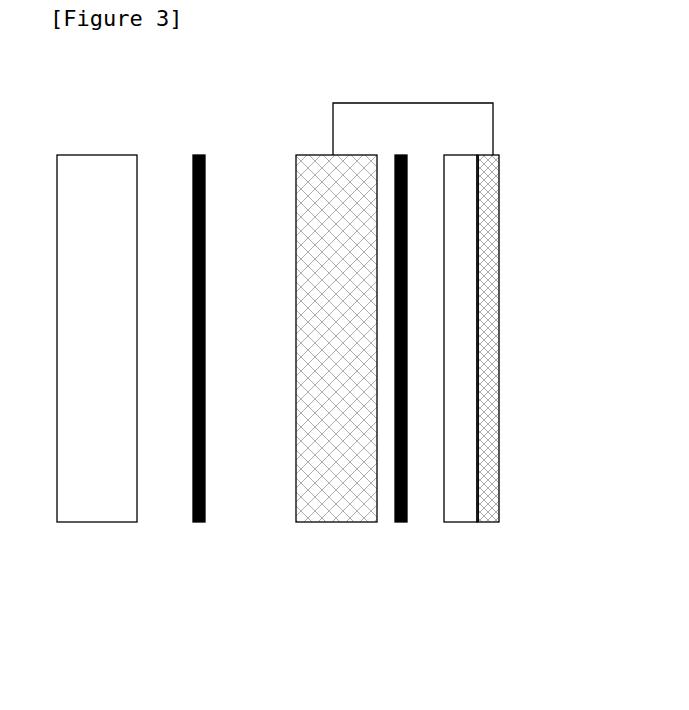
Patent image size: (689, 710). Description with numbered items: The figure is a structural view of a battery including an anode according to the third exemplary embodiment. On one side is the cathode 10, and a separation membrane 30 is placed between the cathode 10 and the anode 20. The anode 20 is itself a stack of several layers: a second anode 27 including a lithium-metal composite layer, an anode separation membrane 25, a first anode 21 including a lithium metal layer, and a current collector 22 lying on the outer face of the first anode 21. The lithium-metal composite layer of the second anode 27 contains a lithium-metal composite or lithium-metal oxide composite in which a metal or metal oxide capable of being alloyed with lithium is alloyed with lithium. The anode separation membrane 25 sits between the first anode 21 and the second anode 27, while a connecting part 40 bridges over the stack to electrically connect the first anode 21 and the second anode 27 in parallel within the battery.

The cathode 10 is at (112, 503).
The anode 20 is at (442, 628).
The first anode 21 is at (463, 497).
The current collector 22 is at (488, 500).
The anode separation membrane 25 is at (407, 298).
The second anode including lithium-metal composite layer 27 is at (343, 497).
The separation membrane 30 is at (198, 524).
The connecting part 40 is at (407, 103).